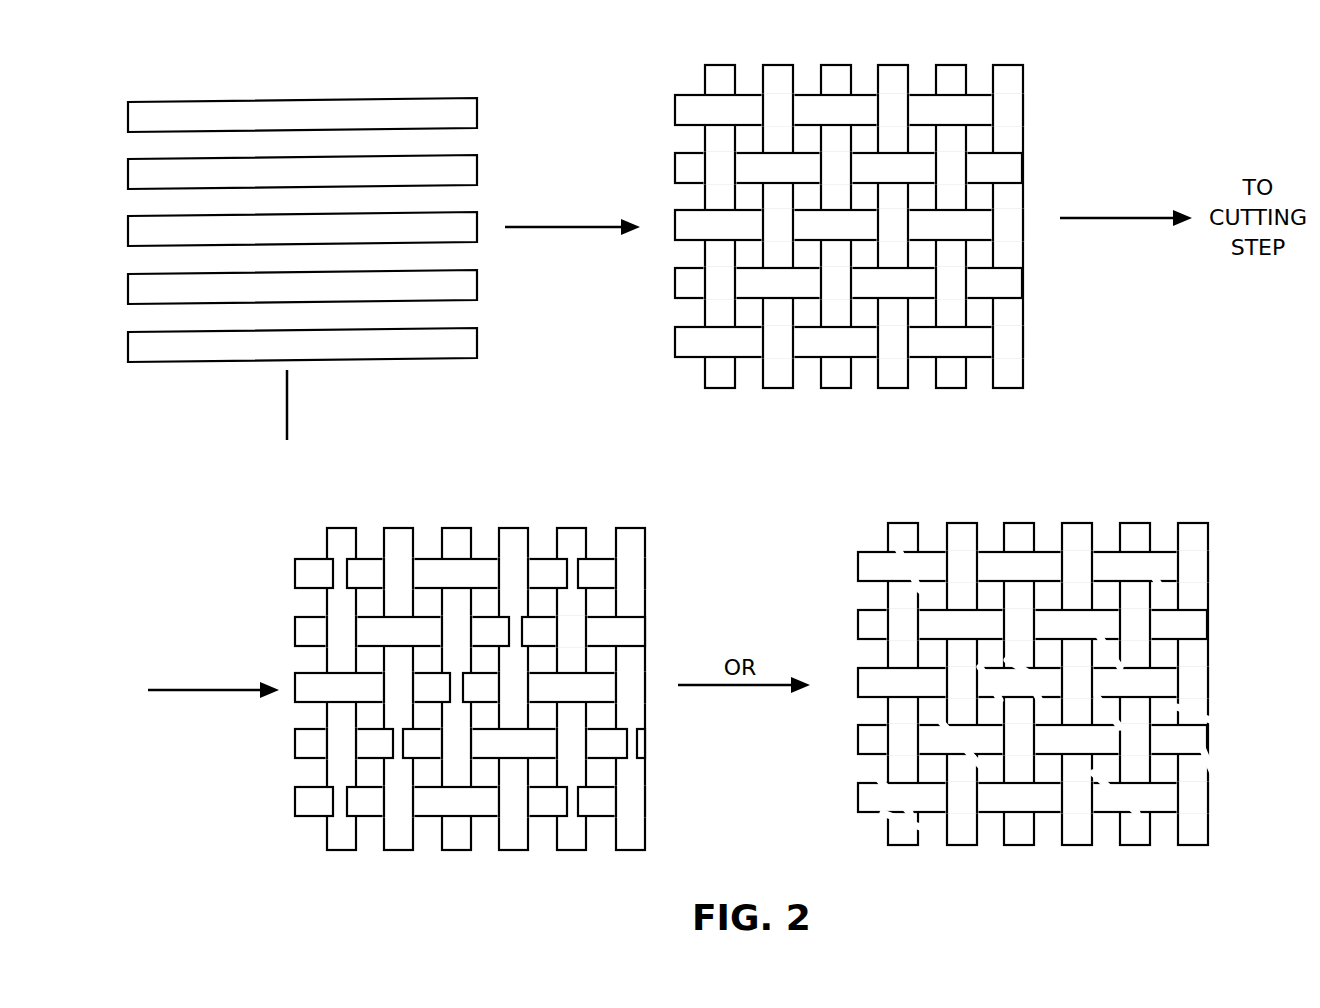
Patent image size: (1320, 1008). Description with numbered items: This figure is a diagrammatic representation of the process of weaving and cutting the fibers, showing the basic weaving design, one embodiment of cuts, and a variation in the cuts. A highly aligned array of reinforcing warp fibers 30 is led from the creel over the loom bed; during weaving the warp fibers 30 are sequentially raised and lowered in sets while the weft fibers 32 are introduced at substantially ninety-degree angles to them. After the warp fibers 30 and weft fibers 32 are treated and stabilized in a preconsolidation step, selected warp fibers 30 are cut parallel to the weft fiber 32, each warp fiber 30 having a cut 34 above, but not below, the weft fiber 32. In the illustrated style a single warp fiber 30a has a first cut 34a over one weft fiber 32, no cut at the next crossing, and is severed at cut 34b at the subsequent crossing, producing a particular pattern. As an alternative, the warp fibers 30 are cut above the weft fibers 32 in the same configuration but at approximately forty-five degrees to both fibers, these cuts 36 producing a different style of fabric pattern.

The reinforcing warp fibers 30 is at (152, 375).
The weft fibers 32 is at (705, 74).
The single warp fiber 30a is at (488, 556).
The cut 34 is at (340, 812).
The first cut 34a is at (342, 565).
The cut 34b is at (570, 570).
The cuts 36 is at (900, 568).